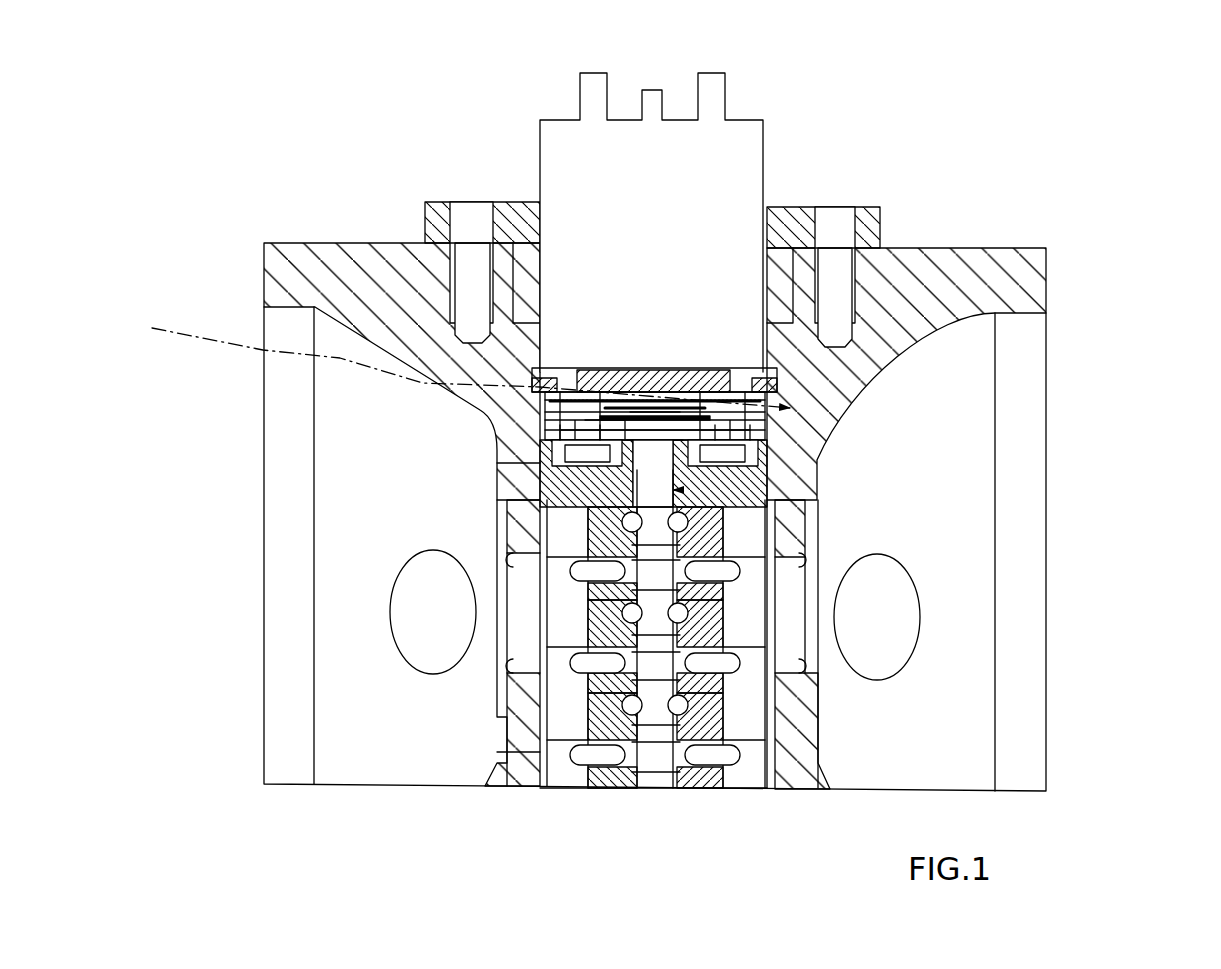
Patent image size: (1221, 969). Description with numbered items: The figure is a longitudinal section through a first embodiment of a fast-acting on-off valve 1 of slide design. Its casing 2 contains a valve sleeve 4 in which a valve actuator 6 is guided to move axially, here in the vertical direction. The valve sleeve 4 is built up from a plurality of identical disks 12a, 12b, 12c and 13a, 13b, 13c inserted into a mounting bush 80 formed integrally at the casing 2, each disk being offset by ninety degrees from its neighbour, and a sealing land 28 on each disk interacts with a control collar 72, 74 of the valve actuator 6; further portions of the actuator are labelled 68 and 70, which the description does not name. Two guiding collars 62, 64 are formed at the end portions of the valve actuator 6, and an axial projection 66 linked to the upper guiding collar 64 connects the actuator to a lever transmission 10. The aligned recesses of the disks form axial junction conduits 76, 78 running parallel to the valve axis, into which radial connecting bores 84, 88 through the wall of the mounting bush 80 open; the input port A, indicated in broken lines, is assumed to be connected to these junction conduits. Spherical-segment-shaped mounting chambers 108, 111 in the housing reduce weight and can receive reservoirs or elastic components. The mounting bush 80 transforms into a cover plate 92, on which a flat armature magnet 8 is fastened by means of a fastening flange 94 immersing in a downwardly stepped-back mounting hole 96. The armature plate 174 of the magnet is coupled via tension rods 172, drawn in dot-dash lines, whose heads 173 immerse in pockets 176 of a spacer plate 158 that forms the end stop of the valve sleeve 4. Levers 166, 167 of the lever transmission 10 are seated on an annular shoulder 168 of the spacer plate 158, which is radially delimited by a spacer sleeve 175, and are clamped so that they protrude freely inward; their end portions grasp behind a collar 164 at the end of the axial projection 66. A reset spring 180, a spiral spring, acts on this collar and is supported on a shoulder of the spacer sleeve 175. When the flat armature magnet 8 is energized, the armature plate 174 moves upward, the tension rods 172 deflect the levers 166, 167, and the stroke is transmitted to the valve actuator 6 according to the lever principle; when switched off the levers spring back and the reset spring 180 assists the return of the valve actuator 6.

The fast-acting on-off valve 1 is at (783, 190).
The casing 2 is at (1048, 278).
The valve sleeve 4 is at (767, 598).
The valve actuator 6 is at (820, 495).
The flat armature magnet 8 is at (716, 231).
The lever transmission 10 is at (820, 404).
The disk 12a is at (822, 764).
The disk 12b is at (815, 687).
The disk 12c is at (588, 590).
The disk 13a is at (815, 718).
The disk 13b is at (810, 627).
The disk 13c is at (588, 525).
The sealing land 28 is at (600, 726).
The guiding collar 62 is at (822, 785).
The guiding collar 64 is at (490, 463).
The axial projection 66 is at (600, 492).
The sleeve bore 68 is at (600, 685).
The spool land 70 is at (588, 738).
The control collar 72 is at (578, 760).
The control collar 74 is at (625, 672).
The junction conduit 76 is at (570, 786).
The junction conduit 78 is at (747, 788).
The mounting bush 80 is at (820, 523).
The connecting bore 84 is at (805, 573).
The connecting bore 88 is at (505, 563).
The cover plate 92 is at (995, 247).
The fastening flange 94 is at (880, 218).
The mounting hole 96 is at (790, 322).
The mounting chamber 108 is at (965, 394).
The mounting chamber 111 is at (340, 337).
The spacer plate 158 is at (565, 493).
The collar 164 is at (553, 447).
The lever 166 is at (552, 445).
The lever 167 is at (790, 363).
The annular shoulder 168 is at (600, 452).
The tension rod 172 is at (728, 378).
The head 173 is at (827, 447).
The armature plate 174 is at (605, 378).
The spacer sleeve 175 is at (632, 378).
The pocket 176 is at (818, 470).
The reset spring 180 is at (683, 378).
The input port A is at (800, 580).